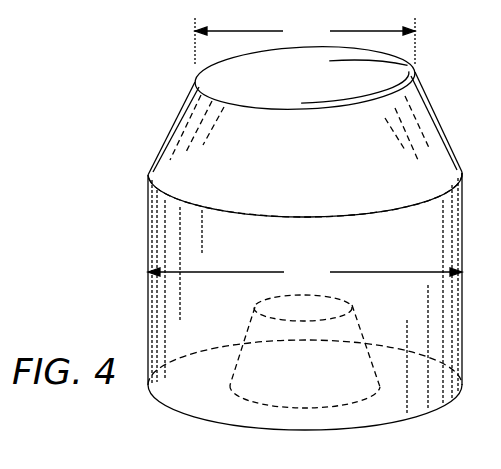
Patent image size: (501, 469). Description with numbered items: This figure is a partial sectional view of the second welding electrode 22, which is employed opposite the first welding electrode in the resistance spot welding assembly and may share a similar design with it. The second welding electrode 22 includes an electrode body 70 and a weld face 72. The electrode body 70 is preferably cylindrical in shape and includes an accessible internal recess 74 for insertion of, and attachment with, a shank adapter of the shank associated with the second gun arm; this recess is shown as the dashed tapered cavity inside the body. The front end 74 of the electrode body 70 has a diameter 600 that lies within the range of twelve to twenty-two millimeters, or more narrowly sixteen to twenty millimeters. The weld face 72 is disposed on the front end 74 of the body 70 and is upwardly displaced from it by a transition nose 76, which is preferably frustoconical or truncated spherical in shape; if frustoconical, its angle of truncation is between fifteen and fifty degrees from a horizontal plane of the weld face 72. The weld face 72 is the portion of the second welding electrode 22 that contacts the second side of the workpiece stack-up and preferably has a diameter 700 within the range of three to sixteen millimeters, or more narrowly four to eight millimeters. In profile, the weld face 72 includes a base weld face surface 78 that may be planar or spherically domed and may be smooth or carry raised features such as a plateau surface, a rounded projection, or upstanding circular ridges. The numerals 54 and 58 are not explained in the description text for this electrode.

The second welding electrode 22 is at (134, 239).
The vial 54 is at (7, 151).
The lid 58 is at (0, 58).
The electrode body 70 is at (408, 243).
The weld face 72 is at (215, 67).
The front end 74 is at (252, 324).
The transition nose 76 is at (398, 125).
The base weld face surface 78 is at (380, 70).
The diameter of the front end 600 is at (305, 273).
The diameter of the weld face 700 is at (305, 42).